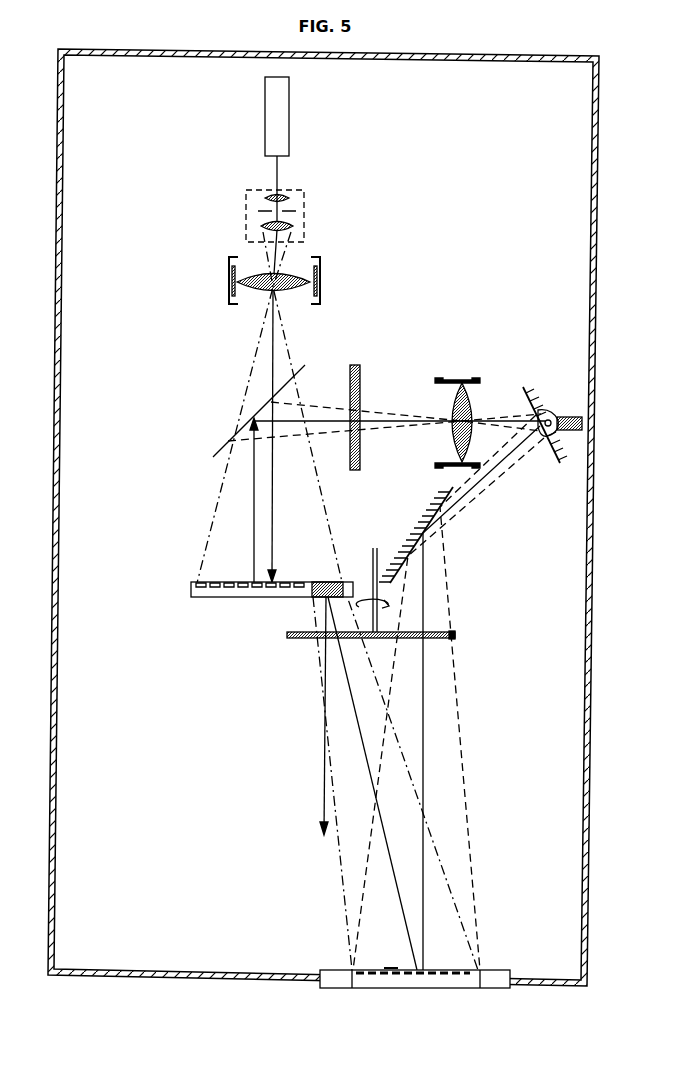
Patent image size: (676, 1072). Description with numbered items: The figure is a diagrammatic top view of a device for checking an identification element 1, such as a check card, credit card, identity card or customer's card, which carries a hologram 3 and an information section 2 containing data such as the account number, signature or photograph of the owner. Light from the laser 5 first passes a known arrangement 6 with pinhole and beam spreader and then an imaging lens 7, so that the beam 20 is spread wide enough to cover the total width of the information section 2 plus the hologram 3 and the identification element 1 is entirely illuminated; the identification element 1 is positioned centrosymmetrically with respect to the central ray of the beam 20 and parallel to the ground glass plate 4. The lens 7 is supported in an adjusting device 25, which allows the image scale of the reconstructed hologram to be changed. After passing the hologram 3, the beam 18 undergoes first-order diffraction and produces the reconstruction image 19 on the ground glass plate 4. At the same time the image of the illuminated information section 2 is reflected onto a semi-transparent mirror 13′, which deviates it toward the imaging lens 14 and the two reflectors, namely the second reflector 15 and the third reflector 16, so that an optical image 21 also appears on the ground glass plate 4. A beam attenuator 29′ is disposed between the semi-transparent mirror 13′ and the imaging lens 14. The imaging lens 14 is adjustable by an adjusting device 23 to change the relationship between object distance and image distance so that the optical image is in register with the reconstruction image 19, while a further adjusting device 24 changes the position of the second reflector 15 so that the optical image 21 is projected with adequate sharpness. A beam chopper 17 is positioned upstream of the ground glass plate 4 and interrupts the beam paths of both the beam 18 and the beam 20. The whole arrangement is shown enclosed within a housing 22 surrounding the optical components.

The identification element 1 is at (213, 591).
The information section 2 is at (218, 580).
The hologram 3 is at (317, 595).
The ground glass plate 4 is at (335, 978).
The laser 5 is at (292, 103).
The arrangement with pinhole and beam spreader 6 is at (305, 211).
The imaging lens 7 is at (312, 281).
The semi-transparent mirror 13′ is at (222, 452).
The imaging lens 14 is at (465, 385).
The second reflector 15 is at (532, 388).
The third reflector 16 is at (438, 506).
The beam chopper 17 is at (430, 640).
The beam 18 is at (418, 803).
The reconstruction image 19 is at (388, 976).
The beam 20 is at (318, 488).
The optical image 21 is at (391, 966).
The housing 22 is at (584, 760).
The adjusting device 23 is at (456, 378).
The adjusting device 24 is at (571, 417).
The adjusting device 25 is at (321, 299).
The beam attenuator 29′ is at (361, 371).